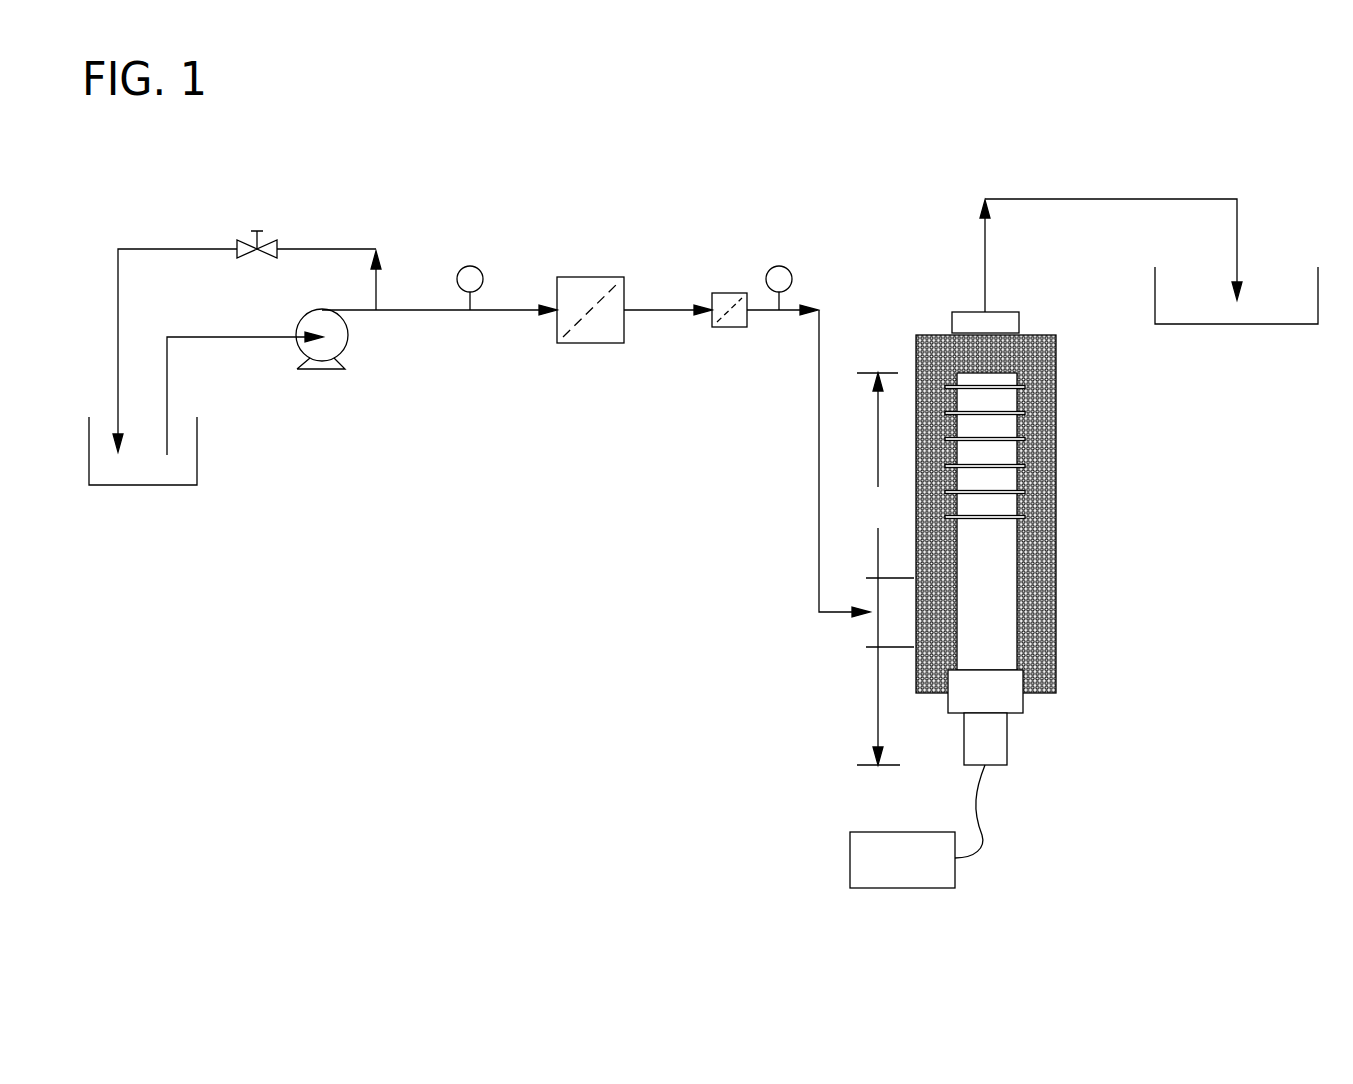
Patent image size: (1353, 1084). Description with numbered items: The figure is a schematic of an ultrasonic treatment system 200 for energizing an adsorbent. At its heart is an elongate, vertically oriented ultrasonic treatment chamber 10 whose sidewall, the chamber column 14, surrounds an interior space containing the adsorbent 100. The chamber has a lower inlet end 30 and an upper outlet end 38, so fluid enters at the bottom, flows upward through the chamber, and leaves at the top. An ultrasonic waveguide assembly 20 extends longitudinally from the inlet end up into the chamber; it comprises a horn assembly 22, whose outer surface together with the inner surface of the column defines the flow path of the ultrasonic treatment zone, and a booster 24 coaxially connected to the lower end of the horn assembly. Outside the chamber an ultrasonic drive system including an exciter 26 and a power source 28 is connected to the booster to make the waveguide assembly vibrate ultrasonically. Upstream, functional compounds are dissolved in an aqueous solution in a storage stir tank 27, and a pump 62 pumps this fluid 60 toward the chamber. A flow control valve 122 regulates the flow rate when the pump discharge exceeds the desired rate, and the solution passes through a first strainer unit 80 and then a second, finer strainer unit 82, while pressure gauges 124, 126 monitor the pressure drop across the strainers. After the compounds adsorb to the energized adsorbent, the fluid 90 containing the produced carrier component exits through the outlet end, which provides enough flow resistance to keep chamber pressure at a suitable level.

The ultrasonic treatment chamber 10 is at (1097, 504).
The chamber column 14 is at (1057, 483).
The ultrasonic waveguide assembly 20 is at (878, 569).
The horn assembly 22 is at (1017, 627).
The booster 24 is at (1019, 703).
The exciter 26 is at (1000, 752).
The storage stir tank 27 is at (117, 503).
The power source 28 is at (896, 875).
The inlet end 30 is at (858, 635).
The outlet end 38 is at (1000, 295).
The fluid 60 is at (819, 431).
The pump 62 is at (323, 350).
The first strainer unit 80 is at (577, 277).
The second strainer unit 82 is at (723, 293).
The fluid 90 is at (1006, 199).
The adsorbent 100 is at (1046, 400).
The flow control valve 122 is at (257, 231).
The pressure gauge 124 is at (463, 268).
The pressure gauge 126 is at (790, 270).
The ultrasonic treatment system 200 is at (1046, 533).